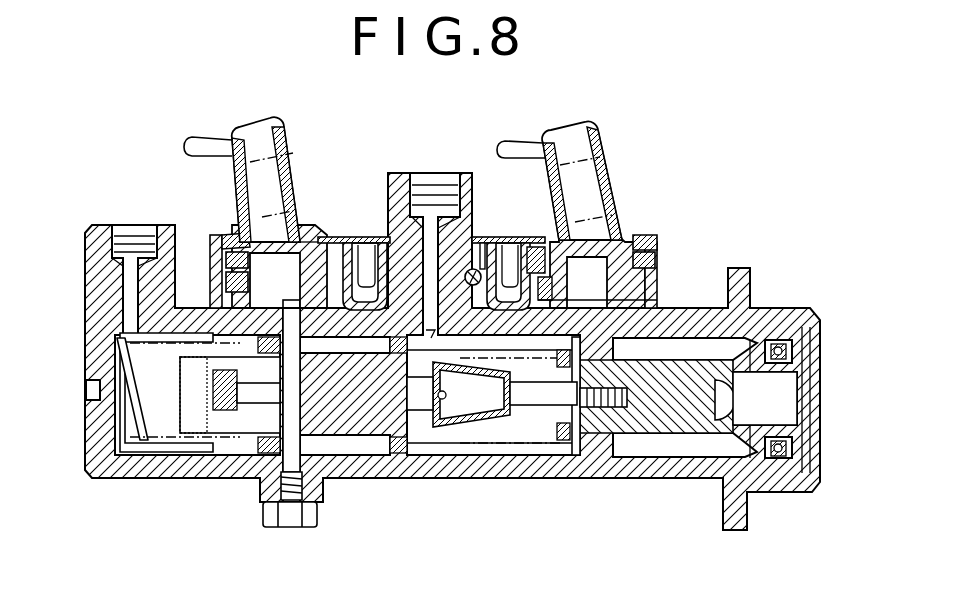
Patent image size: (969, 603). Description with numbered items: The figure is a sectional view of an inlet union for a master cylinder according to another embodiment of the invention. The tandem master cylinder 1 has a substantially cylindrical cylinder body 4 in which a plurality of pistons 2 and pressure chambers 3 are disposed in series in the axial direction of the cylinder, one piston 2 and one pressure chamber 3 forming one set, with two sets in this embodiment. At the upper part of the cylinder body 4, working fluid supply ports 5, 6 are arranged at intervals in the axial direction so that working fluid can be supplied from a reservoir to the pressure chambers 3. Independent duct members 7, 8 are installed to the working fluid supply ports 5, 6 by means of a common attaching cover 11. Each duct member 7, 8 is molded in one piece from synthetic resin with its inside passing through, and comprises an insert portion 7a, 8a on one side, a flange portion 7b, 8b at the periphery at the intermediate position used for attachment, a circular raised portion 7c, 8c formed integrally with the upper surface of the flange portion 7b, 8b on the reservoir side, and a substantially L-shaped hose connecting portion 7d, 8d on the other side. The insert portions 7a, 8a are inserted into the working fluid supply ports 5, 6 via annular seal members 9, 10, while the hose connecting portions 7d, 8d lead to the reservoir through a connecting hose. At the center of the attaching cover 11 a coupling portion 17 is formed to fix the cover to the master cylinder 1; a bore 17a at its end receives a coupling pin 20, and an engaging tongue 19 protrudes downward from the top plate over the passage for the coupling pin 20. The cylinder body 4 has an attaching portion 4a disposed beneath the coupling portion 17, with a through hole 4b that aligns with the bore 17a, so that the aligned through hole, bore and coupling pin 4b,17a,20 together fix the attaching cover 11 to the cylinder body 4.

The tandem master cylinder 1 is at (775, 306).
The piston 2 is at (340, 413).
The pressure chamber 3 is at (162, 413).
The cylinder body 4 is at (720, 472).
The attaching portion 4a is at (507, 247).
The through hole, bore and coupling pin 4b,17a,20 is at (462, 174).
The through hole 4b is at (462, 174).
The bore 17a is at (462, 174).
The coupling pin 20 is at (478, 262).
The working fluid supply port 5 is at (237, 292).
The working fluid supply port 6 is at (655, 304).
The duct member 7 is at (288, 131).
The insert portion 7a is at (255, 272).
The flange portion 7b is at (230, 246).
The circular raised portion 7c is at (237, 233).
The hose connecting portion 7d is at (232, 140).
The duct member 8 is at (596, 154).
The insert portion 8a is at (626, 246).
The flange portion 8b is at (655, 243).
The circular raised portion 8c is at (612, 237).
The hose connecting portion 8d is at (552, 156).
The annular seal member 9 is at (237, 267).
The annular seal member 10 is at (655, 257).
The attaching cover 11 is at (347, 236).
The coupling portion 17 is at (377, 233).
The engaging tongue 19 is at (478, 268).